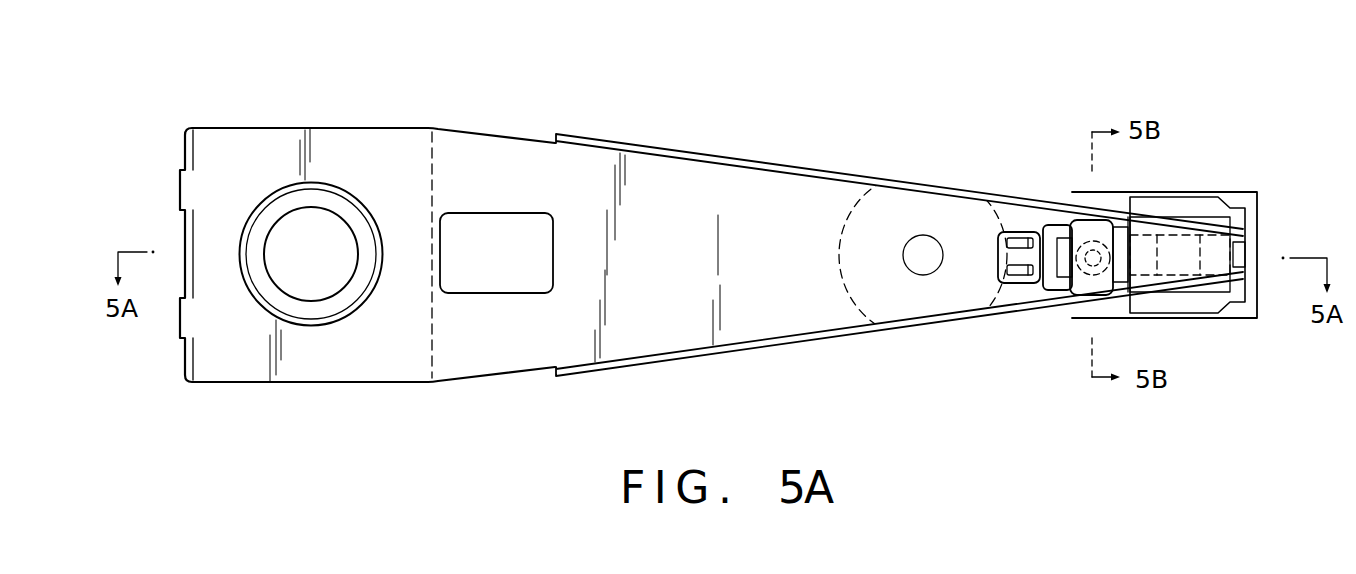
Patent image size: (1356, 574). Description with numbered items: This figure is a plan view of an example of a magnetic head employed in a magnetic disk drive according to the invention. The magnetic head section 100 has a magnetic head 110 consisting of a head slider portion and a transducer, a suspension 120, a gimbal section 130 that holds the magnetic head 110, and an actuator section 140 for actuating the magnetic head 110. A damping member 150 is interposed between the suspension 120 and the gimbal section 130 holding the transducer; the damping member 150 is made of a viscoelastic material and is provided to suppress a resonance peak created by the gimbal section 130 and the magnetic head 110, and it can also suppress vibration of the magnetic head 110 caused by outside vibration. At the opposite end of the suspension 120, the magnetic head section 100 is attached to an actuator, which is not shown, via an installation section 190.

The magnetic head section 100 is at (452, 100).
The magnetic head 110 is at (1212, 292).
The suspension 120 is at (644, 165).
The gimbal section 130 is at (1245, 313).
The actuator section 140 is at (1088, 227).
The damping member 150 is at (1180, 260).
The installation section 190 is at (243, 147).